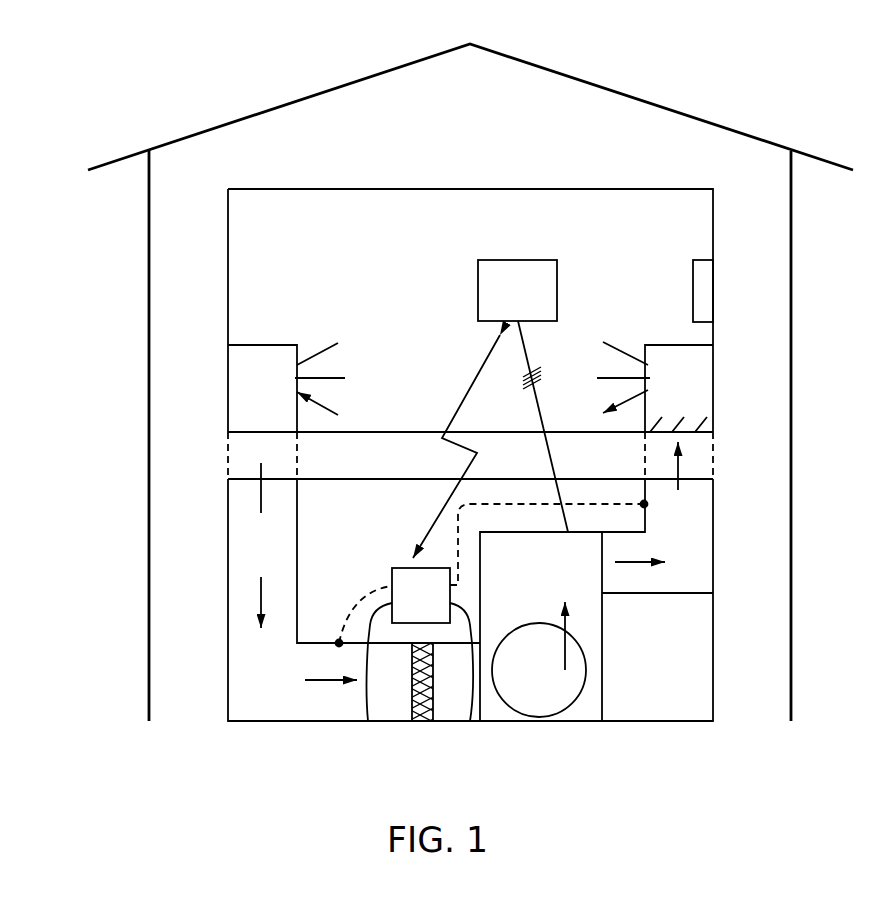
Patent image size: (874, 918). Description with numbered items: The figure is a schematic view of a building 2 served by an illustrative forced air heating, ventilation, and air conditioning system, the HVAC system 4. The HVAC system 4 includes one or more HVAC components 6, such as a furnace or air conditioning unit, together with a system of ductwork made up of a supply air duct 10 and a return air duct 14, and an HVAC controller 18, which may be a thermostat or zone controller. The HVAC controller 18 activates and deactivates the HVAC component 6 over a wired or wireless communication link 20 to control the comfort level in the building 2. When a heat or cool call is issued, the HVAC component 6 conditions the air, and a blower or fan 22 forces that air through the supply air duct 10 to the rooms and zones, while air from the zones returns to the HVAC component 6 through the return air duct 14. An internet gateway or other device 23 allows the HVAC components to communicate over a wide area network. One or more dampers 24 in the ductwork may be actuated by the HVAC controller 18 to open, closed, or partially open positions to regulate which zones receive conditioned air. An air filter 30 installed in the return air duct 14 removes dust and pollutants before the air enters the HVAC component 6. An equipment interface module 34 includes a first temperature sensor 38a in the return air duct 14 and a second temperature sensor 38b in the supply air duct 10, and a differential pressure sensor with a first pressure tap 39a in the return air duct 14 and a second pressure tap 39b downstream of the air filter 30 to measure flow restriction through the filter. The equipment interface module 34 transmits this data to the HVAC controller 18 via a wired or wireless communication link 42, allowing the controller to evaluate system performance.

The building 2 is at (662, 108).
The HVAC system 4 is at (680, 685).
The HVAC component 6 is at (602, 660).
The supply air duct 10 is at (668, 549).
The return air duct 14 is at (255, 552).
The HVAC controller 18 is at (518, 260).
The communication link 20 is at (537, 408).
The blower or fan 22 is at (572, 702).
The internet gateway 23 is at (703, 288).
The damper 24 is at (712, 425).
The air filter 30 is at (422, 721).
The equipment interface module 34 is at (402, 567).
The first temperature sensor 38a is at (339, 643).
The second temperature sensor 38b is at (644, 504).
The first pressure tap 39a is at (366, 721).
The second pressure tap 39b is at (470, 721).
The communication link 42 is at (473, 382).